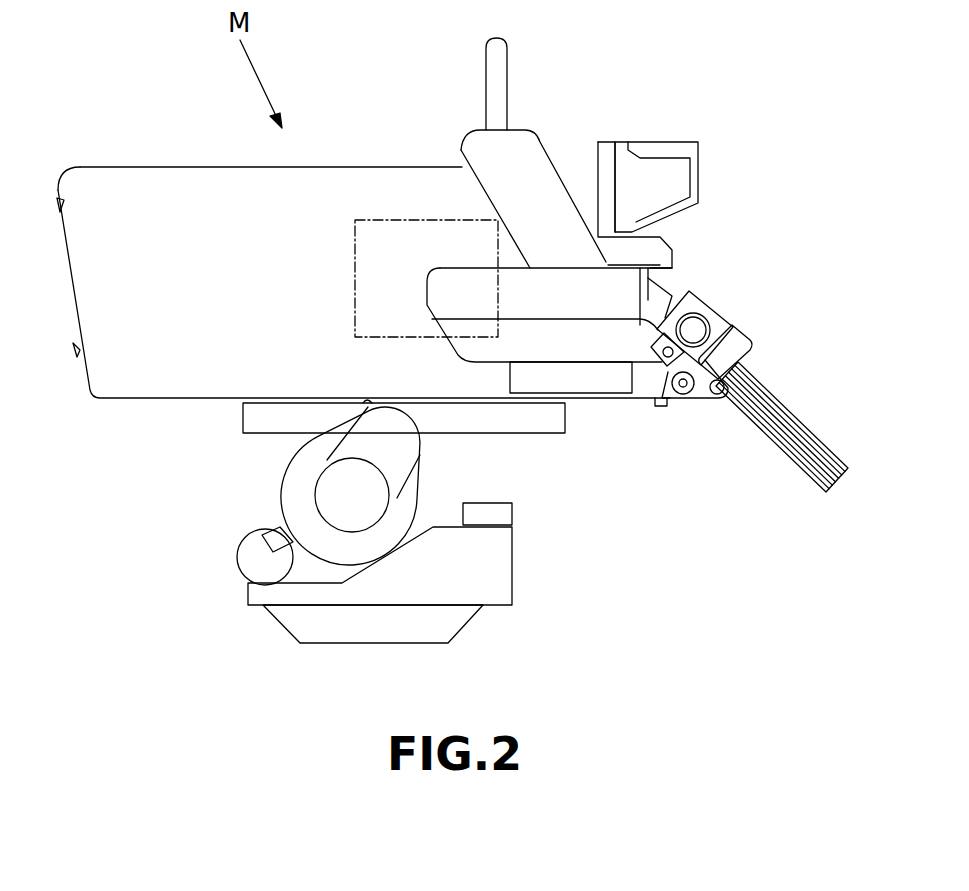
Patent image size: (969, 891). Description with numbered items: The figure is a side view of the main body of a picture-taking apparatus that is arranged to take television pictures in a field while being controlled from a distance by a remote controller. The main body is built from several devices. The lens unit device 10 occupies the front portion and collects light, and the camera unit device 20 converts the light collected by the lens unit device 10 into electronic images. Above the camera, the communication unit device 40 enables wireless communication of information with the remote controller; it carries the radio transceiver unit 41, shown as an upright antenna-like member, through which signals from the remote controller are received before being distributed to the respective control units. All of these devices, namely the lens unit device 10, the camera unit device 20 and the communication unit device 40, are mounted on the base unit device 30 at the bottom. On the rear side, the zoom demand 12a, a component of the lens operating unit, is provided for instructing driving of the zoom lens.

The lens unit device 10 is at (167, 200).
The camera unit device 20 is at (383, 232).
The base unit device 30 is at (210, 576).
The communication unit device 40 is at (528, 165).
The radio transceiver unit 41 is at (497, 67).
The zoom demand 12a is at (813, 460).